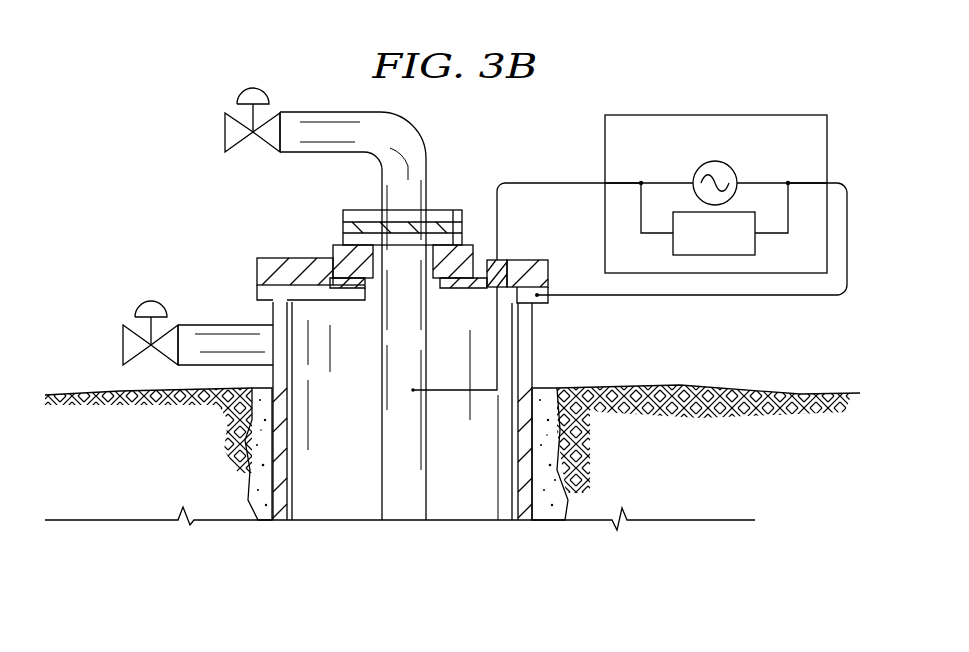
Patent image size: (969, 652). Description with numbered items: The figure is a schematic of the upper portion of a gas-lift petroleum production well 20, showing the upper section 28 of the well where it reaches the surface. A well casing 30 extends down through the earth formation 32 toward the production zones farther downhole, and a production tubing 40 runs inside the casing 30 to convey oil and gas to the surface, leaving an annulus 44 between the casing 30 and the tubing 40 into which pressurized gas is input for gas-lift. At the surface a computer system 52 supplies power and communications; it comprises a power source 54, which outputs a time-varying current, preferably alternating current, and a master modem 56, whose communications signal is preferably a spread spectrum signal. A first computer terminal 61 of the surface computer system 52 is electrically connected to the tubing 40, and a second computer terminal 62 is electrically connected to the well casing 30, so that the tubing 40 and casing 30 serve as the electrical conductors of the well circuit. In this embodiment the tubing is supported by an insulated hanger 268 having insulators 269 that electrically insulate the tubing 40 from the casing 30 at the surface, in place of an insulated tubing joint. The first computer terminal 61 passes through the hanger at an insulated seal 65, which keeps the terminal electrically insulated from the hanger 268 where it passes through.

The petroleum production well 20 is at (468, 176).
The upper section 28 is at (210, 460).
The well casing 30 is at (258, 514).
The formation 32 is at (173, 443).
The production tubing 40 is at (382, 490).
The annulus 44 is at (350, 411).
The surface computer system 52 is at (827, 160).
The power source 54 is at (735, 180).
The master modem 56 is at (755, 248).
The first computer terminal 61 is at (452, 396).
The second computer terminal 62 is at (690, 296).
The insulated seal 65 is at (492, 288).
The insulated hanger 268 is at (258, 263).
The insulators 269 is at (343, 226).